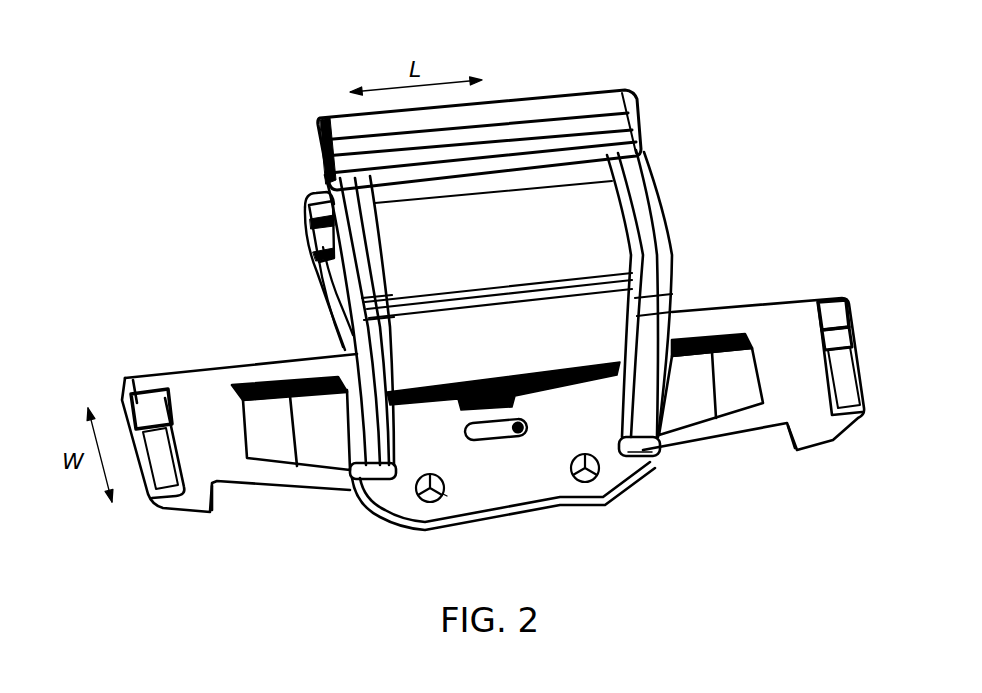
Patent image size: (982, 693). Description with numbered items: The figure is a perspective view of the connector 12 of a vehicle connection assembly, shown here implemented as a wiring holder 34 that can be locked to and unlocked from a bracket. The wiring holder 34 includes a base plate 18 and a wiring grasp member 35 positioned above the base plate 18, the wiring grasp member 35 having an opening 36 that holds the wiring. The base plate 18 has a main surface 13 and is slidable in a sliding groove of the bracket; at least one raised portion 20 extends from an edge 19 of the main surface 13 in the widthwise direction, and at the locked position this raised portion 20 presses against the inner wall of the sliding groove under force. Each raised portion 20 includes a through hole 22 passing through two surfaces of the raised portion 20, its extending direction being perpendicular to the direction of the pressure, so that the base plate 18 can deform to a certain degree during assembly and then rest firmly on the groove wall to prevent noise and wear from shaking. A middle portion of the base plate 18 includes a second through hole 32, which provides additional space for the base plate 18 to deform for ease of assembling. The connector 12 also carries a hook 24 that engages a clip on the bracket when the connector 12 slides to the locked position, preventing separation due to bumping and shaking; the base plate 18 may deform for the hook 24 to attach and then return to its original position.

The connector 12 is at (493, 332).
The main surface 13 is at (417, 466).
The base plate 18 is at (661, 458).
The edge 19 is at (540, 512).
The raised portion 20 is at (438, 504).
The through hole 22 is at (443, 494).
The hook 24 is at (218, 497).
The second through hole 32 is at (495, 433).
The wiring holder 34 is at (662, 209).
The wiring grasp member 35 is at (325, 247).
The opening 36 is at (338, 280).